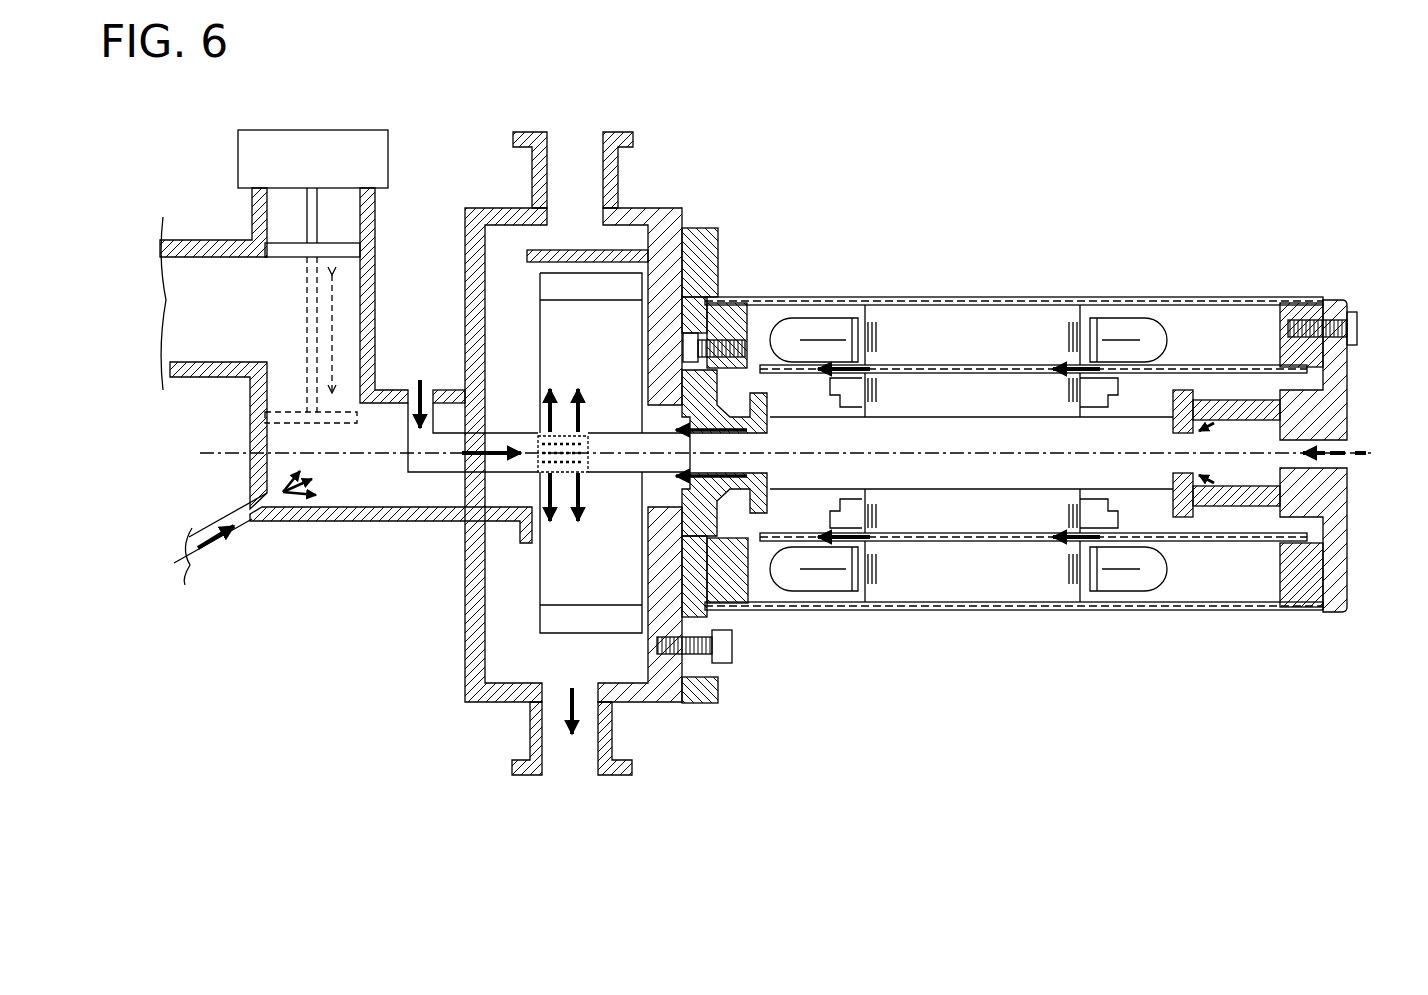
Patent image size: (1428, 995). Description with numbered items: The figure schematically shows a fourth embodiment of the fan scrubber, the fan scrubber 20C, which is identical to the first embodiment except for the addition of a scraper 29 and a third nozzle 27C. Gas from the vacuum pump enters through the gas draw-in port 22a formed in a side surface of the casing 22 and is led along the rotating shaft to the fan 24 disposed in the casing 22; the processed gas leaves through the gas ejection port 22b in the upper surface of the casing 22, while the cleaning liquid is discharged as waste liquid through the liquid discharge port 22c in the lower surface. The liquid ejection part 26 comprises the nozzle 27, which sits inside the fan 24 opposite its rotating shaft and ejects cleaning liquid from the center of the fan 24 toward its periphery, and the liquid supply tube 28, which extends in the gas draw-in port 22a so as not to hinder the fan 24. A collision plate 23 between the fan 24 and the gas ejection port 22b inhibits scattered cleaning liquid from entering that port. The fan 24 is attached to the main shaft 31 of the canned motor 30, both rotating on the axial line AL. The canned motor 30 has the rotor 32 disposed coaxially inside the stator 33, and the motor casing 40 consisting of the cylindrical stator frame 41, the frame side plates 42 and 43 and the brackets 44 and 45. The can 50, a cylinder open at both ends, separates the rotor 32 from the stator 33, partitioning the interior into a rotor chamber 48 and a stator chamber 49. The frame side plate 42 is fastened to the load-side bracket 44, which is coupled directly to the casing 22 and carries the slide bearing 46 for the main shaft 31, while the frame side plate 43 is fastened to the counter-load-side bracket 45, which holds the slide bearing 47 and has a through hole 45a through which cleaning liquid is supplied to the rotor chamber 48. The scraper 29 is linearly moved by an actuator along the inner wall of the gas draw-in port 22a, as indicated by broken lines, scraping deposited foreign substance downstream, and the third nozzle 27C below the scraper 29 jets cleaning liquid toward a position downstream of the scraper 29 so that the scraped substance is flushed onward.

The fan scrubber 20C is at (186, 125).
The casing 22 is at (675, 207).
The gas draw-in port 22a is at (371, 494).
The gas ejection port 22b is at (591, 141).
The liquid discharge port 22c is at (591, 779).
The collision plate 23 is at (610, 313).
The fan 24 is at (710, 272).
The liquid ejection part 26 is at (421, 238).
The nozzle 27 is at (533, 432).
The third nozzle 27C is at (240, 528).
The liquid supply tube 28 is at (392, 360).
The scraper 29 is at (293, 248).
The canned motor 30 is at (1054, 393).
The main shaft 31 is at (917, 438).
The rotor 32 is at (958, 402).
The stator 33 is at (1013, 340).
The motor casing 40 is at (1286, 418).
The stator frame 41 is at (1240, 303).
The frame side plate 42 is at (746, 318).
The frame side plate 43 is at (1284, 322).
The bracket 44 is at (718, 284).
The bracket 45 is at (1329, 314).
The through hole 45a is at (1337, 436).
The slide bearing 46 is at (768, 388).
The slide bearing 47 is at (1176, 392).
The rotor chamber 48 is at (1132, 520).
The stator chamber 49 is at (1182, 579).
The can 50 is at (1013, 542).
The axial line AL is at (1401, 453).